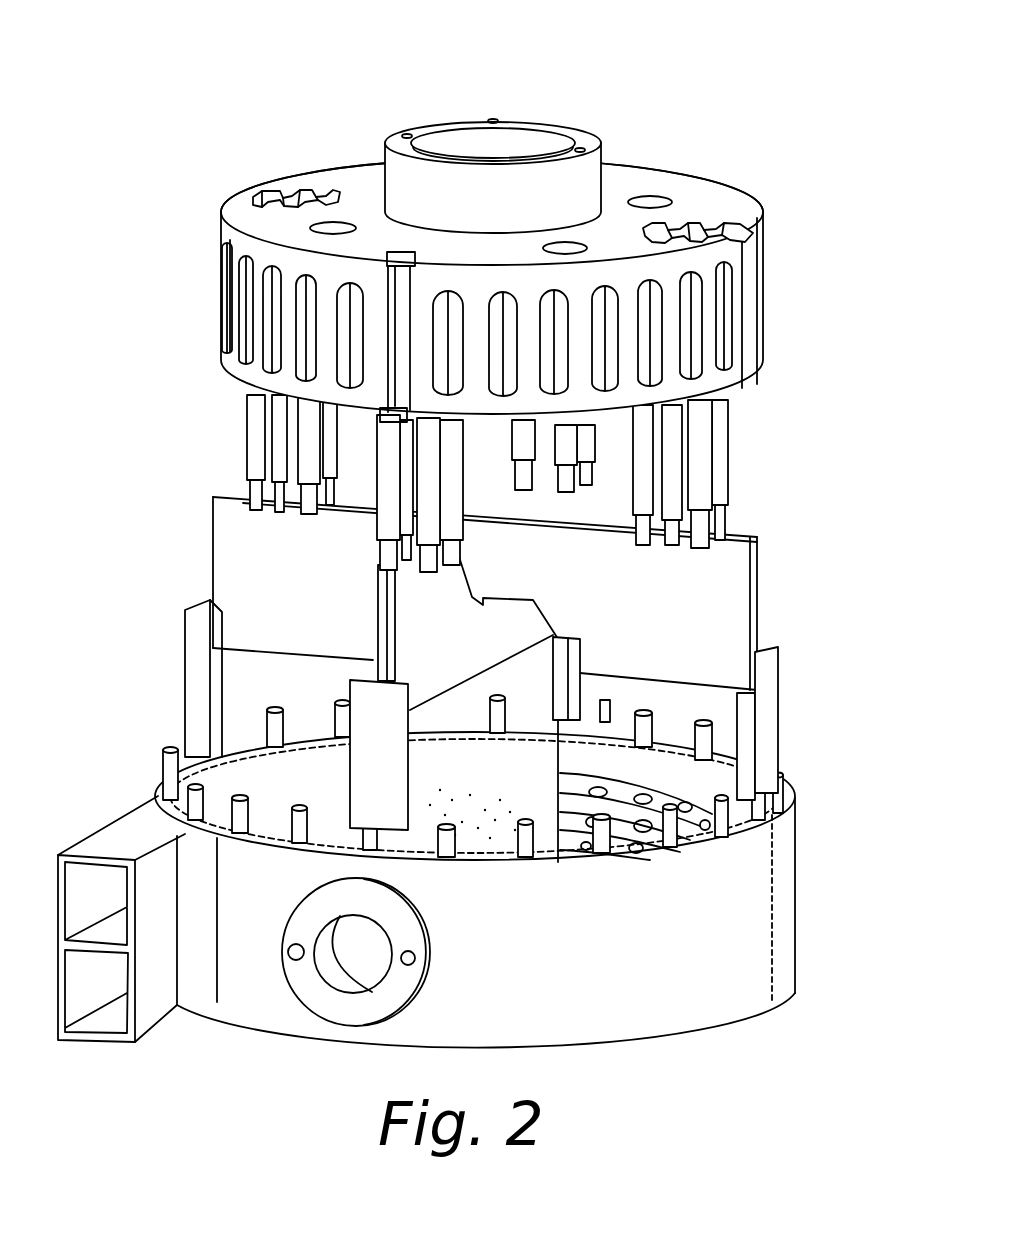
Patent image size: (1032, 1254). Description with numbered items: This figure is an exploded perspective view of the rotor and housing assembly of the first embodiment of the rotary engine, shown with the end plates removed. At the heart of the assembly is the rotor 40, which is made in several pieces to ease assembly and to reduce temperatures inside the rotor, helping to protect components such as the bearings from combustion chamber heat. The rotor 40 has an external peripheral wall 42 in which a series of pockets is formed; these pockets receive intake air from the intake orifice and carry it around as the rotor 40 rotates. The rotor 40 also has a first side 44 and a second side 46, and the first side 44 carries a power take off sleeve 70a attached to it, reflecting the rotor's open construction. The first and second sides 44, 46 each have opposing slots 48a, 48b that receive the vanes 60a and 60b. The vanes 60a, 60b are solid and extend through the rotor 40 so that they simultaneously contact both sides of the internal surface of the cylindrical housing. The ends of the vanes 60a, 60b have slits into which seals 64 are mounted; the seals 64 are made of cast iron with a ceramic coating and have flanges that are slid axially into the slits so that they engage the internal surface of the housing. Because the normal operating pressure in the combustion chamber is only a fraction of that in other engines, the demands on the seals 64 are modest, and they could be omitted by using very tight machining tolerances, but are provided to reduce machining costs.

The rotor 40 is at (511, 297).
The external peripheral wall 42 is at (235, 237).
The first side 44 is at (363, 193).
The second side 46 is at (240, 383).
The slot 48a is at (245, 193).
The slot 48b is at (747, 243).
The power take off sleeve 70a is at (590, 137).
The vane 60a is at (665, 627).
The vane 60b is at (482, 657).
The seal 64 is at (186, 650).